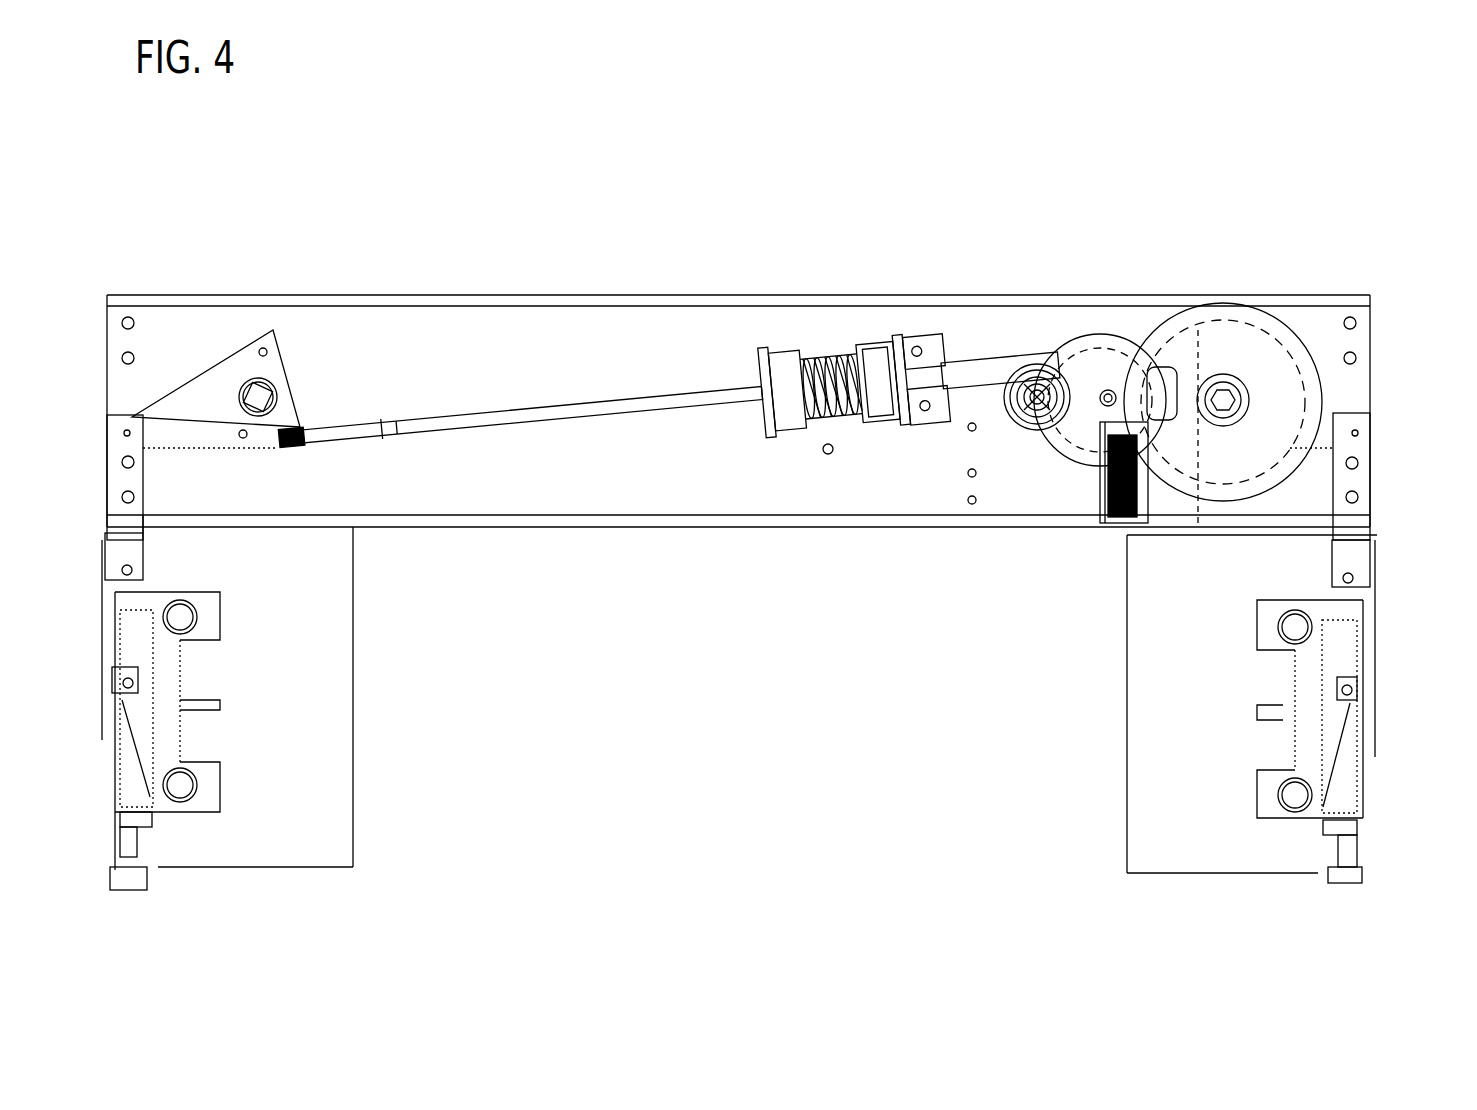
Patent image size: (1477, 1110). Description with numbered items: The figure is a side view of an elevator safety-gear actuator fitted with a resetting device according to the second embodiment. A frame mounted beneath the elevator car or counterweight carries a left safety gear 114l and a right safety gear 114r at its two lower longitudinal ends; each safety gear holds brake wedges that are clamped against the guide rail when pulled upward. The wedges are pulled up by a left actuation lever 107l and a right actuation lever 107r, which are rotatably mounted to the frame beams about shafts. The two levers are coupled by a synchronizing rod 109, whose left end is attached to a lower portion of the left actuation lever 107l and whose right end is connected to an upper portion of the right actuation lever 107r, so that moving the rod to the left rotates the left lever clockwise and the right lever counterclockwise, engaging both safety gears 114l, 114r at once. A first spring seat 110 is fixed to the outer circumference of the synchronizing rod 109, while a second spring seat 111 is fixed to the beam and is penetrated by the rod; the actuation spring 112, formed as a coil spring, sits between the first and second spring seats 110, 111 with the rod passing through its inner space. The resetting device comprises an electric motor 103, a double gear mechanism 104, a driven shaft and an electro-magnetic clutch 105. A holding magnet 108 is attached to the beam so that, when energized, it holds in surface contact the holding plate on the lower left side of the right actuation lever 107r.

The electric motor 103 is at (1017, 430).
The double gear mechanism 104 is at (1160, 350).
The electro-magnetic clutch 105 is at (1278, 350).
The left actuation lever 107l is at (206, 402).
The right actuation lever 107r is at (1330, 408).
The holding magnet 108 is at (1197, 478).
The synchronizing rod 109 is at (542, 413).
The first spring seat 110 is at (777, 378).
The second spring seat 111 is at (888, 345).
The spring 112 is at (813, 368).
The left safety gear 114l is at (323, 737).
The right safety gear 114r is at (1138, 718).